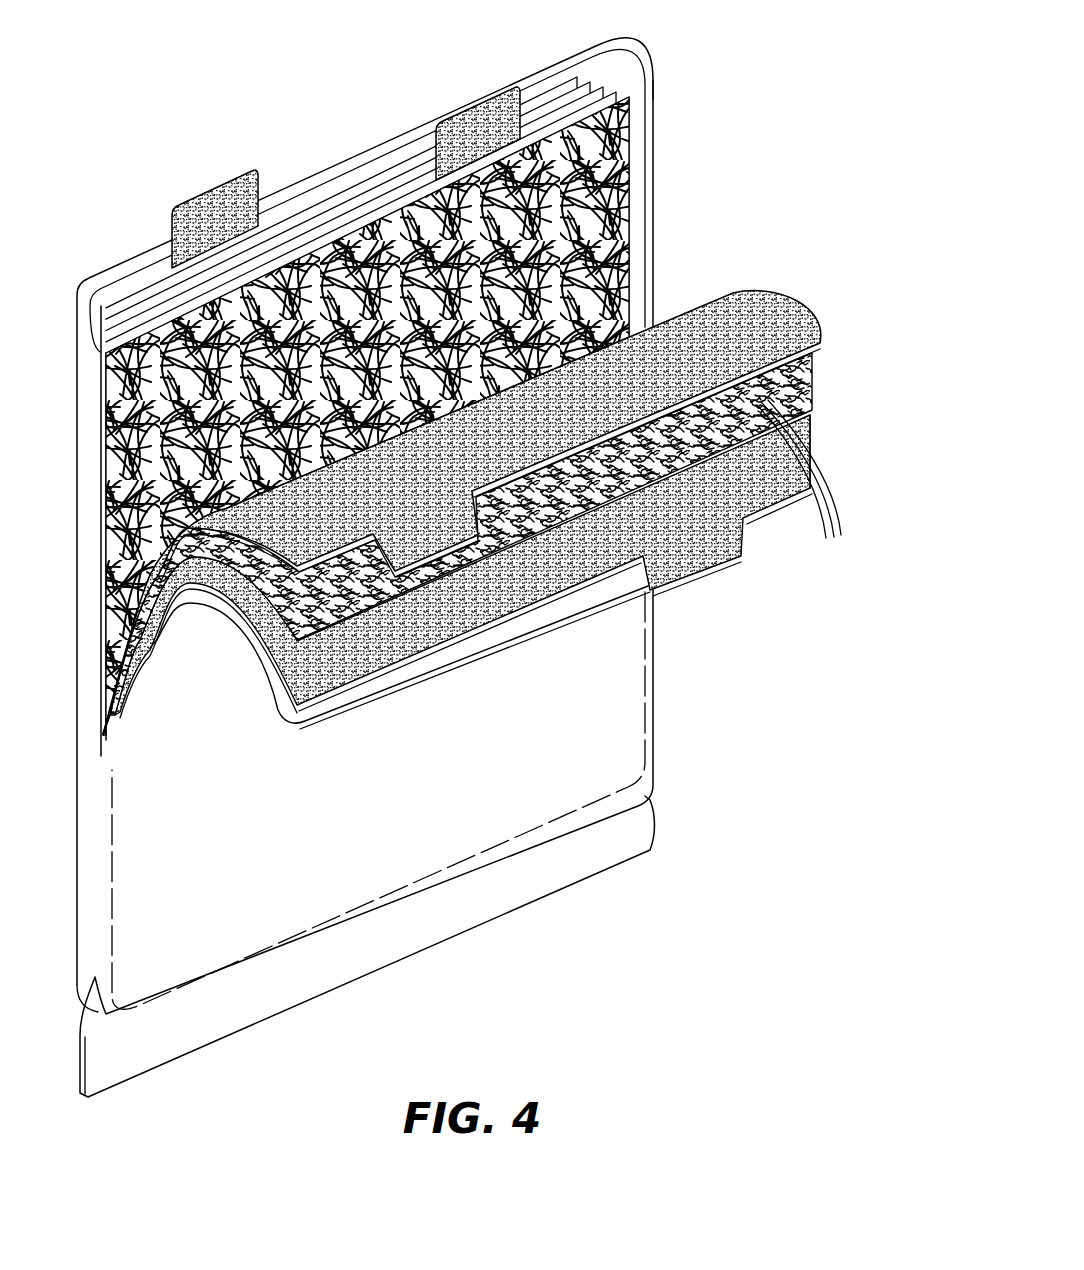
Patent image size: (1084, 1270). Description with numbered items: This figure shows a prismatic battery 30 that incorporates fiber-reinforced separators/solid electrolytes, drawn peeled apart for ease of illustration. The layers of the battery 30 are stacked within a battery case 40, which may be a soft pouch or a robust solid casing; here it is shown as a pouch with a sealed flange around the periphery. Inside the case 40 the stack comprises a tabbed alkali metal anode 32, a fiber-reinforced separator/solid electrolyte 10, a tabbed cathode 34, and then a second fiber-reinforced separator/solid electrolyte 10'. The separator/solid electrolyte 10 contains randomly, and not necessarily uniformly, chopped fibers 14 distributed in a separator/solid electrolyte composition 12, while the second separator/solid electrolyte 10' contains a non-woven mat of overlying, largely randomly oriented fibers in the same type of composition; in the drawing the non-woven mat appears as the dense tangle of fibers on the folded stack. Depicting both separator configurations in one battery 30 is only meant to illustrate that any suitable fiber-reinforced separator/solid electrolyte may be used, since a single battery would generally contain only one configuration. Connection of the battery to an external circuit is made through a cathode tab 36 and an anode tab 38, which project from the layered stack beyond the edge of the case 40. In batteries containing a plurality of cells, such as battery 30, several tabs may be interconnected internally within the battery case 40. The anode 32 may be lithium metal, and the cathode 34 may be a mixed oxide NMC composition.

The fiber-reinforced separator/solid electrolyte 10 is at (857, 398).
The second fiber-reinforced separator/solid electrolyte 10' is at (422, 415).
The separator/solid electrolyte composition 12 is at (807, 383).
The chopped fibers 14 is at (799, 486).
The battery 30 is at (740, 196).
The tabbed alkali metal anode 32 is at (807, 440).
The tabbed cathode 34 is at (745, 305).
The cathode tab 36 is at (213, 203).
The anode tab 38 is at (470, 110).
The battery case 40 is at (610, 683).